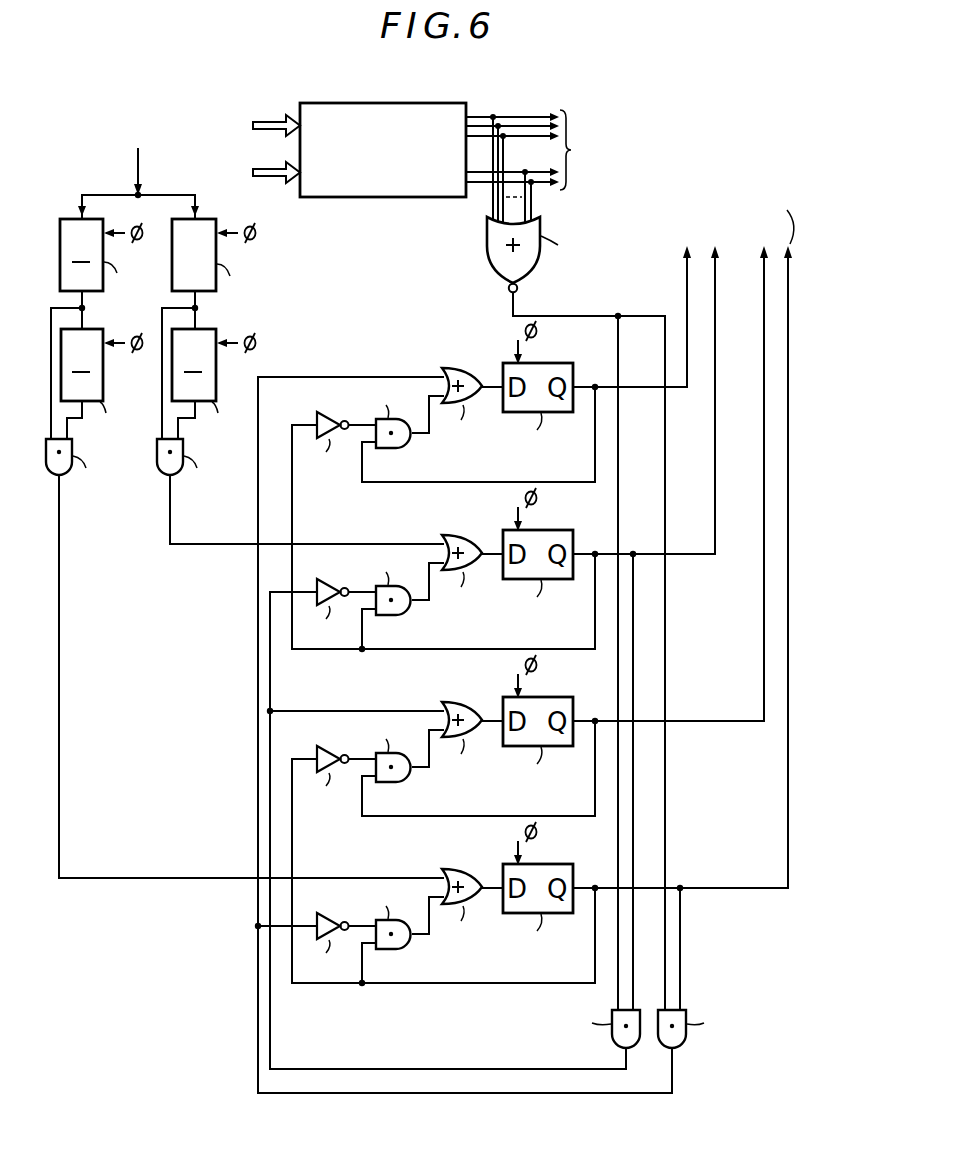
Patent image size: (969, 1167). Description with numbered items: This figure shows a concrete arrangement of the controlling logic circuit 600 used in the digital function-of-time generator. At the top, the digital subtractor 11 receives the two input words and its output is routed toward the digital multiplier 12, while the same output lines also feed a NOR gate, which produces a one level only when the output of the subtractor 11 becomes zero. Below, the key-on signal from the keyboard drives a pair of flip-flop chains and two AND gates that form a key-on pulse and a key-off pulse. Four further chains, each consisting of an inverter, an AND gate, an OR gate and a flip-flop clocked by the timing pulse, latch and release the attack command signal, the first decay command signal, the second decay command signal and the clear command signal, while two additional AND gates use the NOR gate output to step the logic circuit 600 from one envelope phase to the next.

The digital subtractor 11 is at (357, 198).
The digital multiplier 12 is at (624, 150).
The logic circuit 600 is at (150, 952).